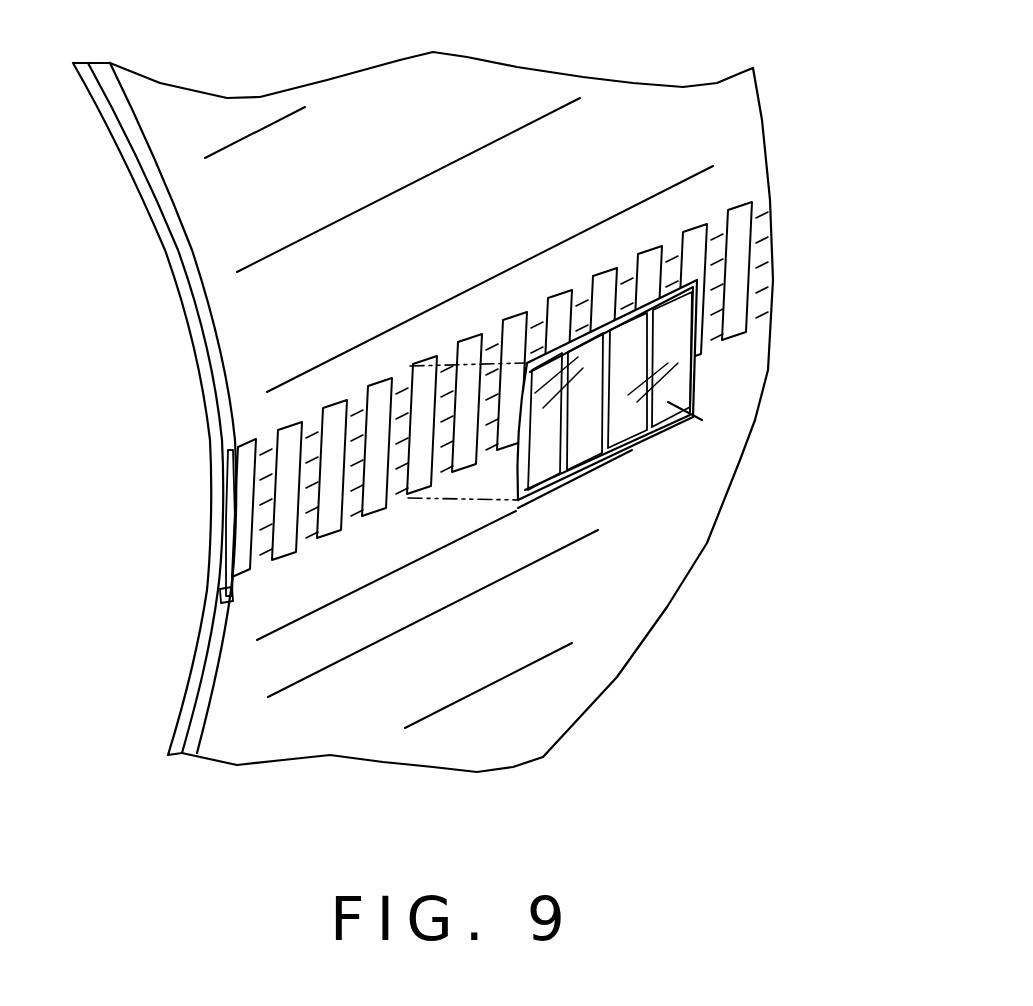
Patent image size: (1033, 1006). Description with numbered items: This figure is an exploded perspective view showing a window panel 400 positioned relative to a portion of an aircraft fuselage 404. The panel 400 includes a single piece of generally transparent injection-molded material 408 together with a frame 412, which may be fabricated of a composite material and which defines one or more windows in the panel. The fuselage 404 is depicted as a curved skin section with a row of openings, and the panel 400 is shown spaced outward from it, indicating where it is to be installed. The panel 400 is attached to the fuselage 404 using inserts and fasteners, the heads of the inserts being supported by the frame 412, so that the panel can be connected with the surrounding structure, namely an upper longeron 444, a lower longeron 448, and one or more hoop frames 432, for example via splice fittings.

The window panel 400 is at (695, 394).
The aircraft fuselage 404 is at (667, 607).
The injection-molded material 408 is at (690, 417).
The frame 412 is at (697, 357).
The hoop frame 432 is at (193, 321).
The upper longeron 444 is at (228, 452).
The lower longeron 448 is at (222, 594).